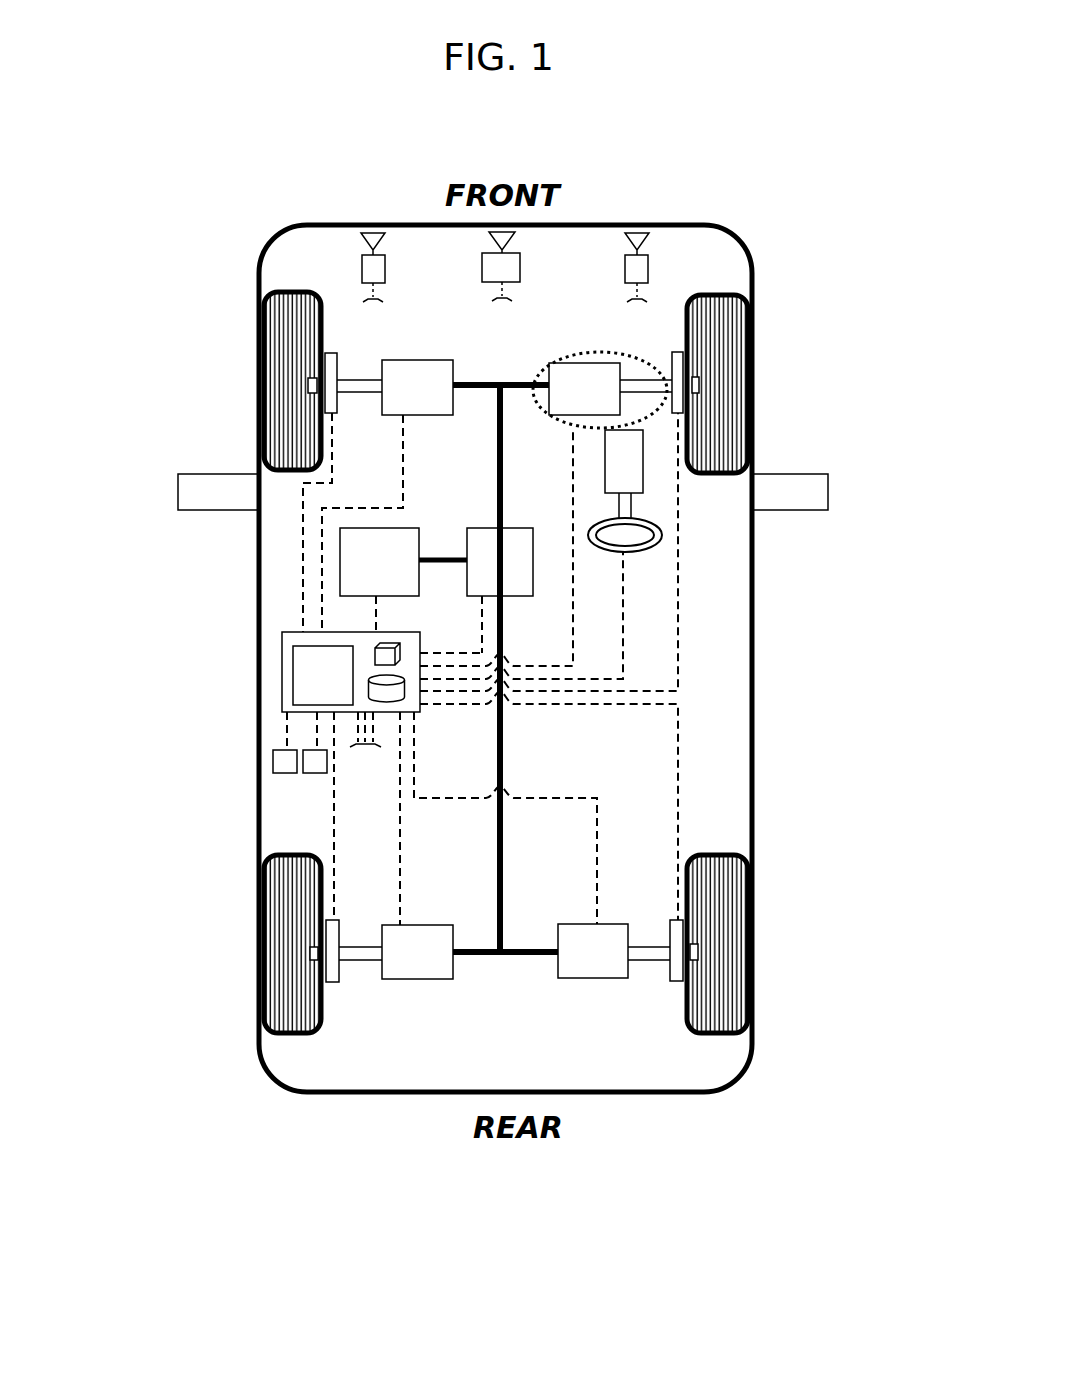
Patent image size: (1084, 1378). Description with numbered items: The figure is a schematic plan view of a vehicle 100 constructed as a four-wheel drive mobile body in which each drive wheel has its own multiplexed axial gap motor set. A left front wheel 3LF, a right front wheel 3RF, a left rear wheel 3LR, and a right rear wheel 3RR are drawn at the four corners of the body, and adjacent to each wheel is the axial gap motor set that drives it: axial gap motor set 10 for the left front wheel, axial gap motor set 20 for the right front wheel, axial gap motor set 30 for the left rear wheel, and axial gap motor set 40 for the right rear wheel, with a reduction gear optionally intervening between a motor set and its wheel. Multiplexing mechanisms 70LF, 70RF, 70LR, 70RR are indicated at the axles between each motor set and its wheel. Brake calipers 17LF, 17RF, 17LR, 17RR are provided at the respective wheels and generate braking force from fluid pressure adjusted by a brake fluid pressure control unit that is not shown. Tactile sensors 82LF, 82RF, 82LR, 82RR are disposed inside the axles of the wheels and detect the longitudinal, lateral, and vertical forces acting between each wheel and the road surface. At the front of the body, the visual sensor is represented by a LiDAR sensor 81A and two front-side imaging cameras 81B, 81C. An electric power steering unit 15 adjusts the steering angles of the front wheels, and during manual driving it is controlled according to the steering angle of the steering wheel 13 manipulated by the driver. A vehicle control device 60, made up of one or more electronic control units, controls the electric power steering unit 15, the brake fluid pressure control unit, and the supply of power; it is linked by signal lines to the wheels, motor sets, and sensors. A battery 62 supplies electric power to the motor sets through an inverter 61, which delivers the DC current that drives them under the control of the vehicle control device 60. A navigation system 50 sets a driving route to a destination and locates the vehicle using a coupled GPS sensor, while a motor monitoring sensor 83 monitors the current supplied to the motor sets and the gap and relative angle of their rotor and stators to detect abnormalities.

The vehicle 100 is at (150, 202).
The axial gap motor set 10 is at (410, 377).
The axial gap motor set 20 is at (558, 375).
The axial gap motor set 30 is at (427, 980).
The axial gap motor set 40 is at (583, 978).
The navigation system 50 is at (313, 775).
The vehicle control device 60 is at (268, 682).
The inverter 61 is at (517, 527).
The battery 62 is at (412, 527).
The motor monitoring sensor 83 is at (273, 758).
The steering wheel 13 is at (662, 533).
The electric power steering unit 15 is at (643, 463).
The left front wheel 3LF is at (270, 428).
The right front wheel 3RF is at (747, 305).
The left rear wheel 3LR is at (272, 1005).
The right rear wheel 3RR is at (732, 880).
The brake caliper 17LF is at (333, 365).
The brake caliper 17RF is at (674, 350).
The brake caliper 17LR is at (336, 985).
The brake caliper 17RR is at (678, 972).
The tactile sensor 82LF is at (307, 385).
The tactile sensor 82RF is at (700, 387).
The tactile sensor 82LR is at (308, 955).
The tactile sensor 82RR is at (700, 950).
The multiplexing mechanism 70LF is at (364, 366).
The multiplexing mechanism 70RF is at (643, 366).
The multiplexing mechanism 70LR is at (372, 975).
The multiplexing mechanism 70RR is at (652, 975).
The LiDAR sensor 81A is at (522, 258).
The front-side imaging camera 81B is at (650, 262).
The front-side imaging camera 81C is at (382, 258).